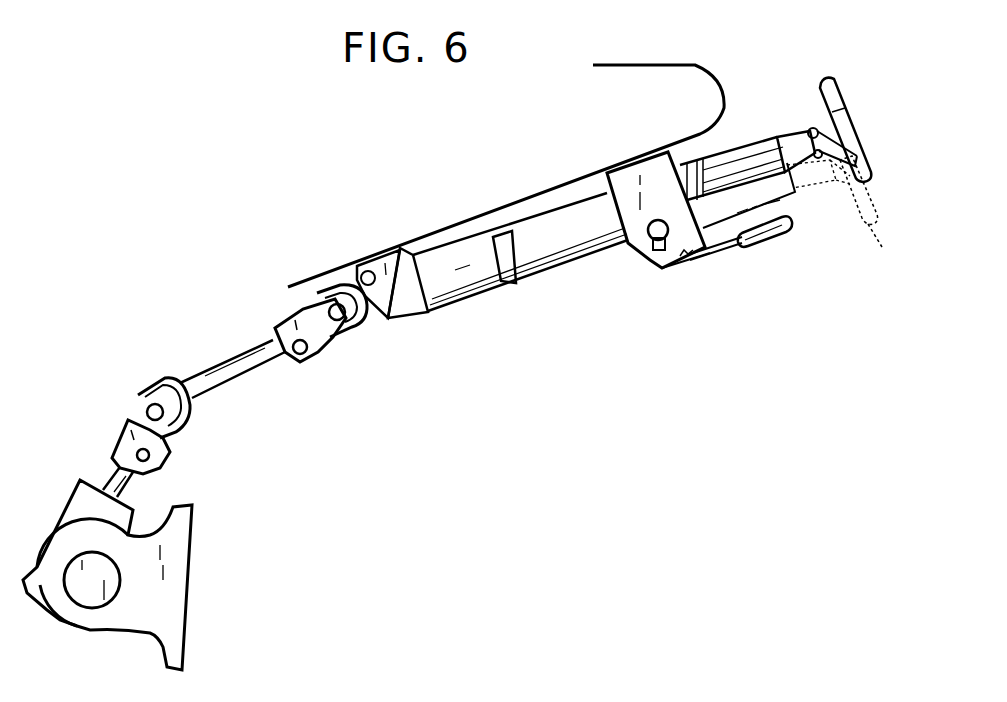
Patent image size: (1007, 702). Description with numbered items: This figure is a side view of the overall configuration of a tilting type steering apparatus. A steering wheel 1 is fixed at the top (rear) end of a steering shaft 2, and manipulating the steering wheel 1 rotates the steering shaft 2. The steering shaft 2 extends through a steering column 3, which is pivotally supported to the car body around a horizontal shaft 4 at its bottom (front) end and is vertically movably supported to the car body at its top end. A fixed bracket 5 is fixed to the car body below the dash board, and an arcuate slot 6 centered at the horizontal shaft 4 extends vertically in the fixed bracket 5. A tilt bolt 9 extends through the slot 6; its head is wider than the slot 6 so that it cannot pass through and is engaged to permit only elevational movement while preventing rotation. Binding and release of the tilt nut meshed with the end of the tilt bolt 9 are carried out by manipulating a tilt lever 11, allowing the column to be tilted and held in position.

The steering wheel 1 is at (827, 78).
The steering shaft 2 is at (793, 135).
The steering column 3 is at (540, 253).
The horizontal shaft 4 is at (368, 271).
The fixed bracket 5 is at (620, 178).
The arcuate slot 6 is at (654, 250).
The tilt bolt 9 is at (651, 233).
The tilt lever 11 is at (765, 243).